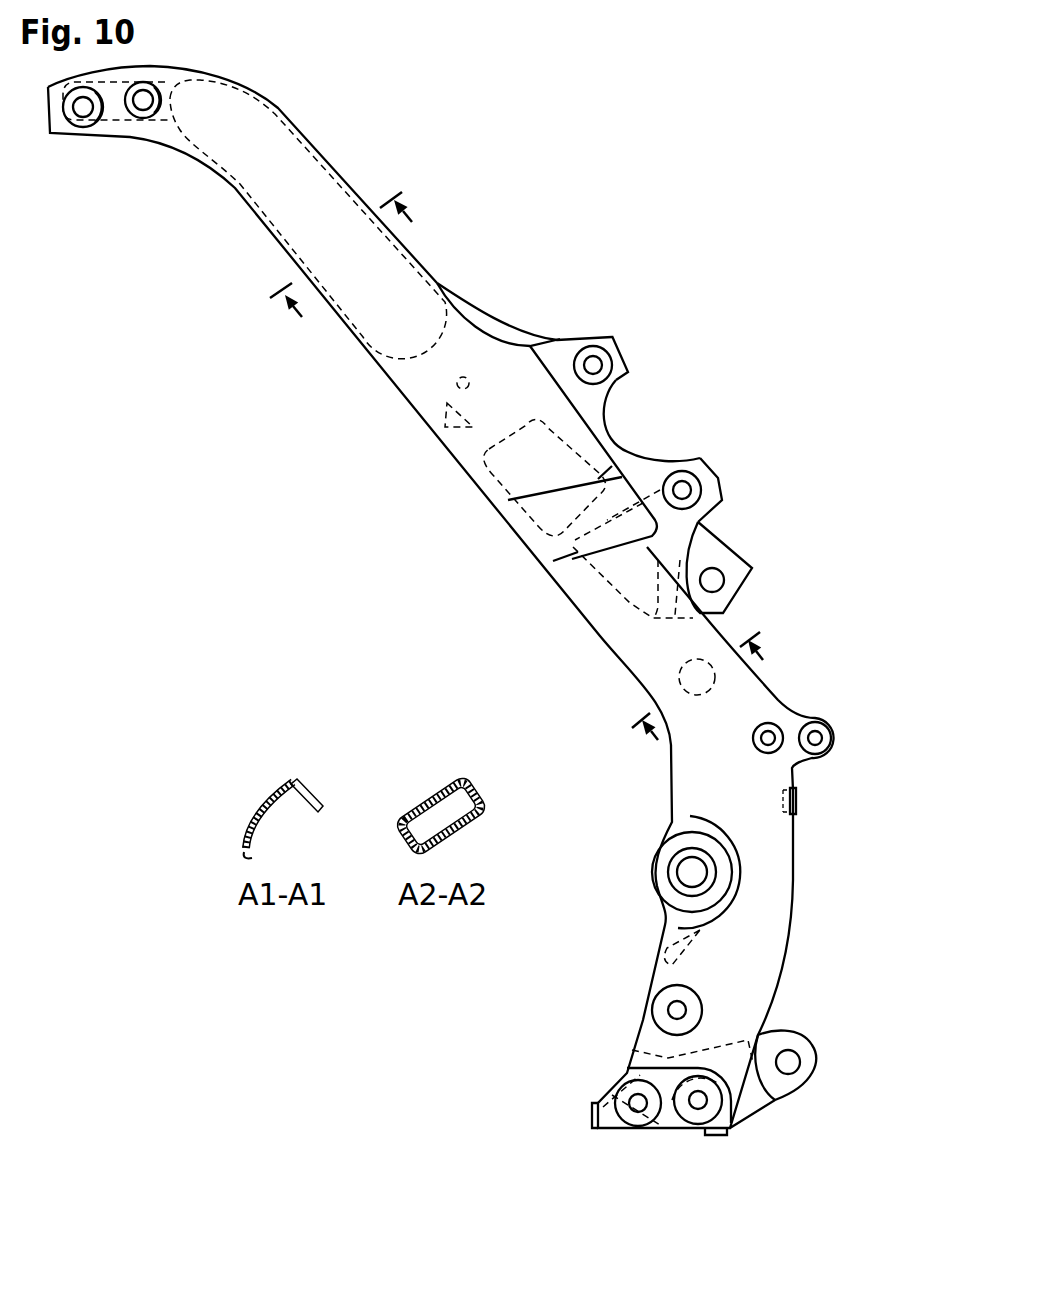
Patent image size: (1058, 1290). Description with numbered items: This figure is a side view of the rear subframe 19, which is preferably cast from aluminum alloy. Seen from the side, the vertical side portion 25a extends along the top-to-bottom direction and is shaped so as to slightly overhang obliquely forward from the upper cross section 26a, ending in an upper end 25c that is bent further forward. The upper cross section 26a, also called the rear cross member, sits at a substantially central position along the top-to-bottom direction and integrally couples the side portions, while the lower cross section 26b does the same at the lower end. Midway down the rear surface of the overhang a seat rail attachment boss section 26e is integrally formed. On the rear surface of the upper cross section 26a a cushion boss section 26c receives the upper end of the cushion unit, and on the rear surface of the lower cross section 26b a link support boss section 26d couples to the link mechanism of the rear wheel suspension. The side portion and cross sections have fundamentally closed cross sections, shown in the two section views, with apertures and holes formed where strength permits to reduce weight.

The rear subframe 19 is at (592, 302).
The vertical side portion 25a is at (566, 620).
The upper end 25c is at (138, 134).
The upper cross section (rear cross member) 26a is at (630, 603).
The lower cross section 26b is at (668, 1058).
The cushion boss section 26c is at (737, 570).
The link support boss section 26d is at (810, 1031).
The seat rail attachment boss sections 26e is at (617, 358).